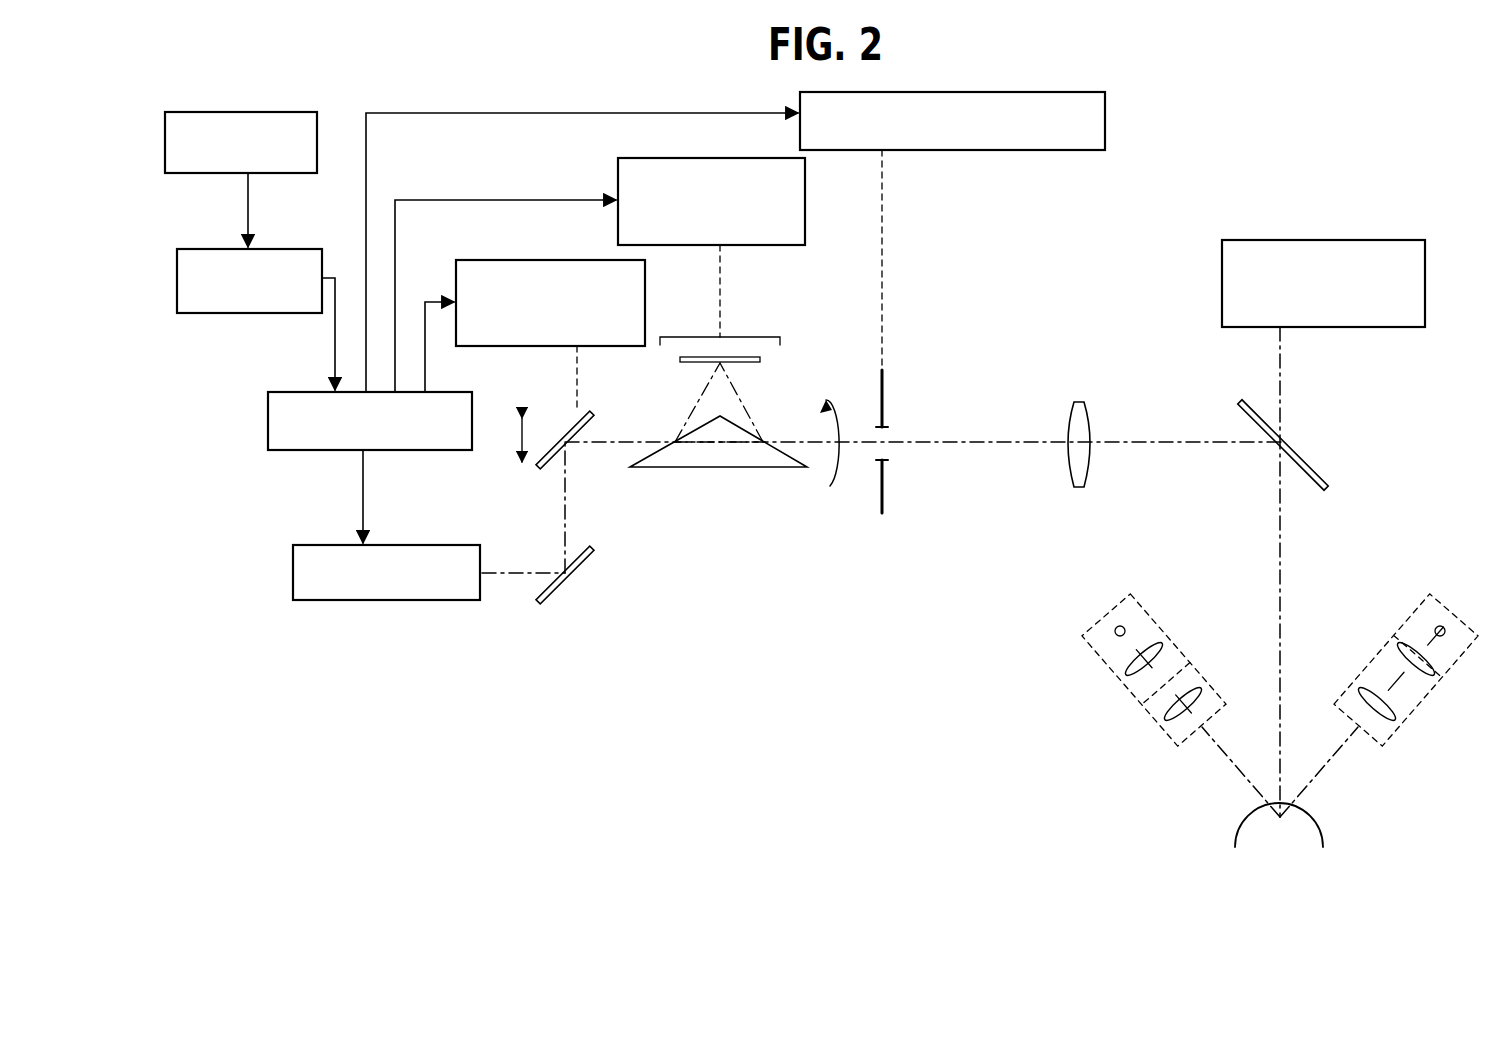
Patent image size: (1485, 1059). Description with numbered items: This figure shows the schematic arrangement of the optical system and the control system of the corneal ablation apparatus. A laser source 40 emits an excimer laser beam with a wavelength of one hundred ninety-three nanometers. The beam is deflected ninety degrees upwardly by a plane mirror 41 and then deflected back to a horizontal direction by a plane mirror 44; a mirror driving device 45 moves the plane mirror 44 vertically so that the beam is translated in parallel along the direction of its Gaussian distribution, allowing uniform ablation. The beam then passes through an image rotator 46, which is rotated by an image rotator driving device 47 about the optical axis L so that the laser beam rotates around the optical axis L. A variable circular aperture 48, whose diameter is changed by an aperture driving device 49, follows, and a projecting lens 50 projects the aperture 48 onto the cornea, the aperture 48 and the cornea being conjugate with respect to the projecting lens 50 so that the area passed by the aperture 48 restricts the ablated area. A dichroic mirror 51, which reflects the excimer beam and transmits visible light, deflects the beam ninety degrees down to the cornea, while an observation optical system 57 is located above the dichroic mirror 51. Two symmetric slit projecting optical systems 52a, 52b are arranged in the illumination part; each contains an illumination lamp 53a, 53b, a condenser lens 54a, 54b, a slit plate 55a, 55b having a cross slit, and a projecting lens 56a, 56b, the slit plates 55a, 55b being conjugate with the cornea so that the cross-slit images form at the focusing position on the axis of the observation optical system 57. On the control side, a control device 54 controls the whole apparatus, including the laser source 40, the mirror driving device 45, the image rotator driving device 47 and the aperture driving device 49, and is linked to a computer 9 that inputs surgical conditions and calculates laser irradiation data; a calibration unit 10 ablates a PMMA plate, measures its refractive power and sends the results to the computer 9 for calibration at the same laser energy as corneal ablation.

The computer 9 is at (240, 313).
The calibration unit 10 is at (248, 112).
The laser source 40 is at (293, 565).
The plane mirror 41 is at (563, 590).
The plane mirror 44 is at (567, 440).
The mirror driving device 45 is at (490, 260).
The image rotator 46 is at (690, 478).
The image rotator driving device 47 is at (668, 158).
The variable circular aperture 48 is at (884, 408).
The aperture driving device 49 is at (930, 150).
The projecting lens 50 is at (1077, 458).
The dichroic mirror 51 is at (1248, 418).
The control device 54 is at (268, 428).
The observation optical system 57 is at (1222, 285).
The optical axis L is at (955, 445).
The slit projecting optical system 52a is at (1115, 605).
The illumination lamp 53a is at (1126, 628).
The condenser lens 54a is at (1165, 640).
The slit plate 55a is at (1180, 672).
The projecting lens 56a is at (1165, 722).
The slit projecting optical system 52b is at (1443, 605).
The illumination lamp 53b is at (1434, 628).
The condenser lens 54b is at (1397, 640).
The slit plate 55b is at (1380, 672).
The projecting lens 56b is at (1393, 722).